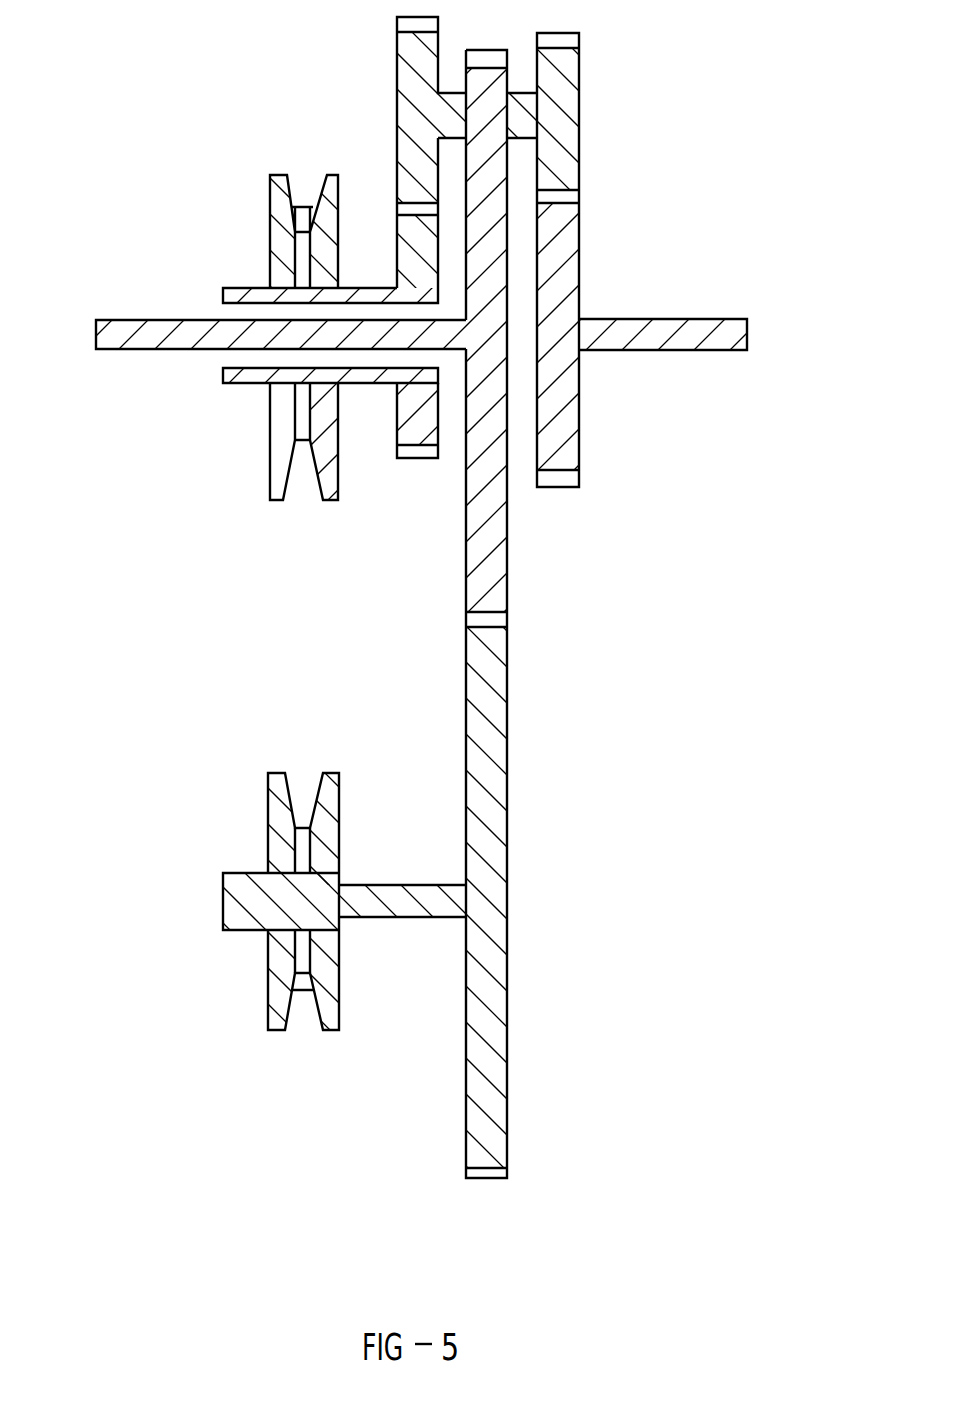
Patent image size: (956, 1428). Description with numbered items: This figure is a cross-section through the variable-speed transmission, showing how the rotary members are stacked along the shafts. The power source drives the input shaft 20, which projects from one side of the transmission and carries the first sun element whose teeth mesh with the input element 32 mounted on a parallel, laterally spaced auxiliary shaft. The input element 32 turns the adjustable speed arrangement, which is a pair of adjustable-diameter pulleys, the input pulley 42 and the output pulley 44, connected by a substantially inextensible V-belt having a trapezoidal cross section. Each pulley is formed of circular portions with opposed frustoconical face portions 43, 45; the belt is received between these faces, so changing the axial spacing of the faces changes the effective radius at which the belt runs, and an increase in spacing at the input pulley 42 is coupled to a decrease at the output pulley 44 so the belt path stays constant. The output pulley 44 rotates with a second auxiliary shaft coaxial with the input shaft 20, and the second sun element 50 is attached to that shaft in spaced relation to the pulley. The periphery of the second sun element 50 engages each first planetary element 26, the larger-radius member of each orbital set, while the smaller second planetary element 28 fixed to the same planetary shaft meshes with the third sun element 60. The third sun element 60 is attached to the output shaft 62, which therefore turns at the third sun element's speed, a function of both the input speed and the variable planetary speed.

The input shaft 20 is at (122, 333).
The first planetary element 26 is at (403, 62).
The second planetary element 28 is at (565, 103).
The input element 32 is at (500, 710).
The input pulley 42 is at (273, 853).
The frustoconical face portion 43 is at (288, 798).
The output pulley 44 is at (285, 252).
The frustoconical face portion 45 is at (317, 797).
The second sun element 50 is at (418, 260).
The third sun element 60 is at (568, 245).
The output shaft 62 is at (717, 322).